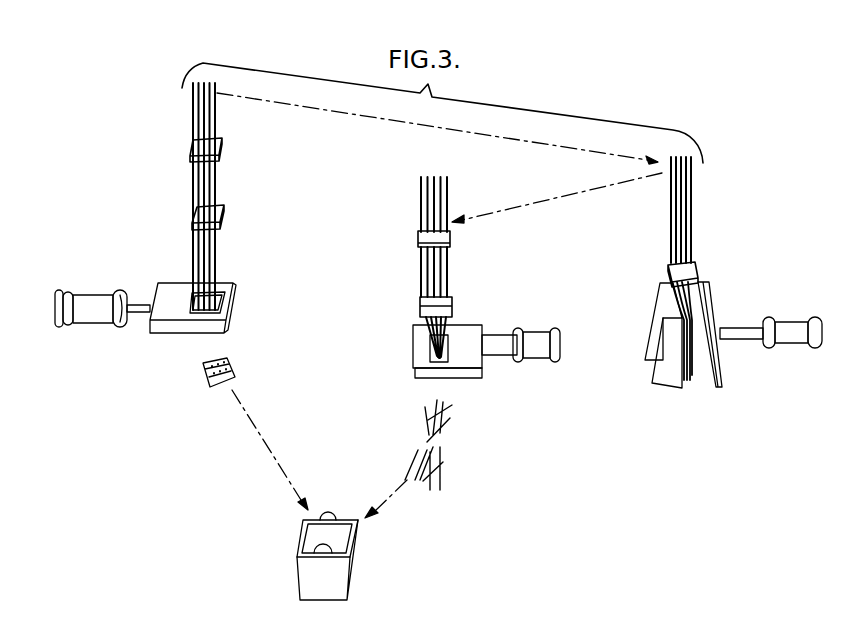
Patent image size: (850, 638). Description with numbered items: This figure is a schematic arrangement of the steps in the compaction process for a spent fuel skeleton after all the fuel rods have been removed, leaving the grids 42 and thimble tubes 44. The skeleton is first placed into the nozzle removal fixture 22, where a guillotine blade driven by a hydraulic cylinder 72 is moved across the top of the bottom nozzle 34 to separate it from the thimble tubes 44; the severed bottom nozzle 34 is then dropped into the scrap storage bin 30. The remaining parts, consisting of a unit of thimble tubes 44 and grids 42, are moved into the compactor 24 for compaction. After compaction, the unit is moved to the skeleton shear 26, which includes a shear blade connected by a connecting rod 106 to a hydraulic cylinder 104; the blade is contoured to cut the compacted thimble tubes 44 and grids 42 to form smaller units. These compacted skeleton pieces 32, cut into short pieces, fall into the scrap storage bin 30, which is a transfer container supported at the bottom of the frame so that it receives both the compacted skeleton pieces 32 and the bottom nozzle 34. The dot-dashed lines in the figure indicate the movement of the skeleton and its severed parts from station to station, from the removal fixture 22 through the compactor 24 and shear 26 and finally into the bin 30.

The nozzle removal fixture 22 is at (158, 263).
The compactor 24 is at (757, 268).
The skeleton shear 26 is at (492, 278).
The scrap storage bin 30 is at (352, 560).
The compacted skeleton pieces 32 is at (690, 360).
The bottom nozzle 34 is at (203, 373).
The grids 42 is at (221, 146).
The thimble tubes 44 is at (212, 180).
The hydraulic cylinder 72 is at (92, 312).
The hydraulic cylinder 104 is at (537, 334).
The connecting rod 106 is at (500, 340).